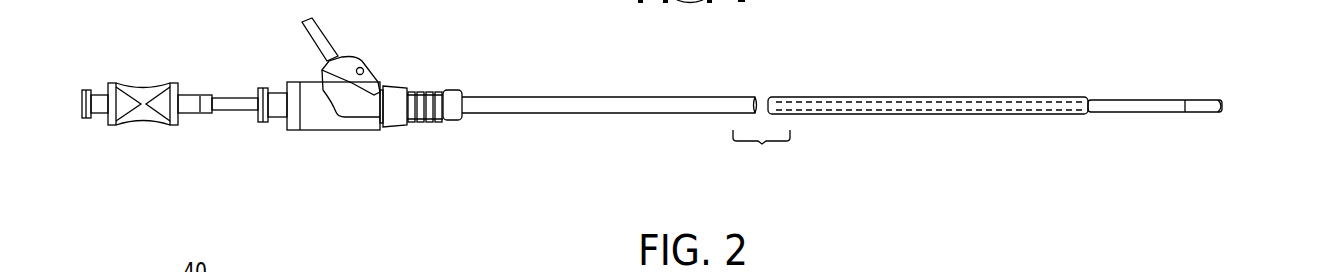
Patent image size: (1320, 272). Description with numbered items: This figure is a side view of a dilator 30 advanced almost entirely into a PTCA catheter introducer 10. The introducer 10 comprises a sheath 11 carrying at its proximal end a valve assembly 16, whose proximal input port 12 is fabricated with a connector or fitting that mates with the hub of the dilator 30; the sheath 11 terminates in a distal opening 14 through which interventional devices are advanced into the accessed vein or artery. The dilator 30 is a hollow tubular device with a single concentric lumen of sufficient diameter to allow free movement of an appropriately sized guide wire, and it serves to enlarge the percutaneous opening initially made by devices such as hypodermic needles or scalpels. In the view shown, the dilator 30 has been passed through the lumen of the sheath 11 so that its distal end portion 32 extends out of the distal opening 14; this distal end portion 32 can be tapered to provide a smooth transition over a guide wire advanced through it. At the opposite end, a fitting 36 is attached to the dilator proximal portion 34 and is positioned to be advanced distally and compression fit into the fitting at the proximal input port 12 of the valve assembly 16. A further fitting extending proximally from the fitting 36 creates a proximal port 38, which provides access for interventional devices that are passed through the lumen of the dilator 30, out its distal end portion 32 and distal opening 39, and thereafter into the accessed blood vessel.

The catheter introducer 10 is at (638, 124).
The sheath 11 is at (717, 115).
The proximal input port 12 is at (257, 119).
The distal opening 14 is at (1090, 114).
The valve assembly 16 is at (372, 140).
The dilator 30 is at (191, 62).
The distal end portion 32 is at (1132, 100).
The dilator proximal portion 34 is at (228, 98).
The fitting 36 is at (148, 88).
The proximal port 38 is at (81, 101).
The distal opening 39 is at (1225, 106).